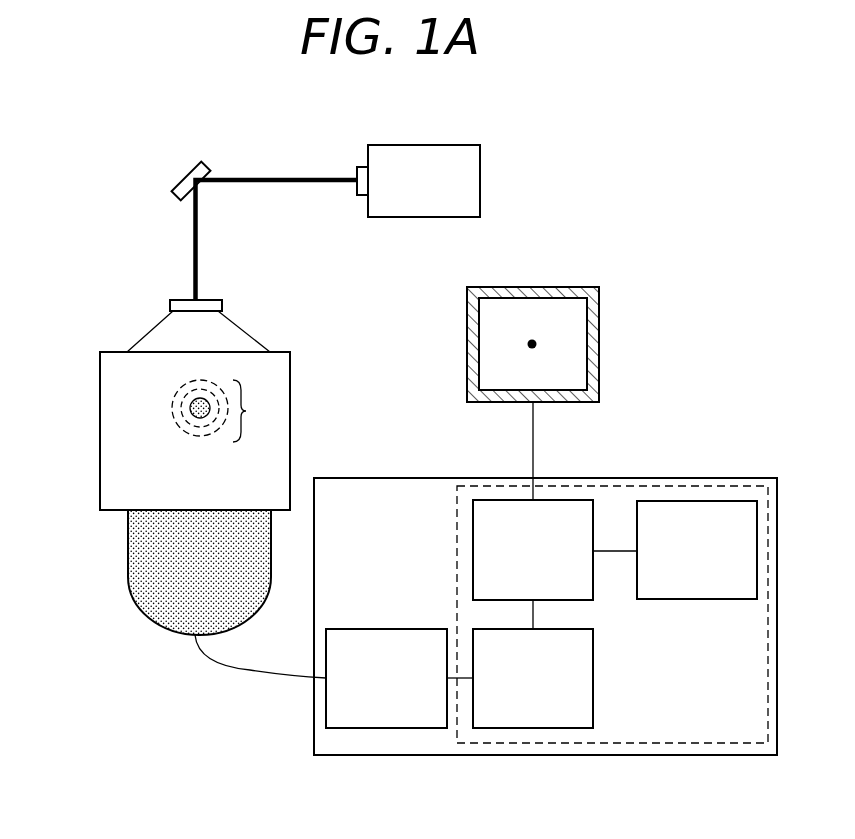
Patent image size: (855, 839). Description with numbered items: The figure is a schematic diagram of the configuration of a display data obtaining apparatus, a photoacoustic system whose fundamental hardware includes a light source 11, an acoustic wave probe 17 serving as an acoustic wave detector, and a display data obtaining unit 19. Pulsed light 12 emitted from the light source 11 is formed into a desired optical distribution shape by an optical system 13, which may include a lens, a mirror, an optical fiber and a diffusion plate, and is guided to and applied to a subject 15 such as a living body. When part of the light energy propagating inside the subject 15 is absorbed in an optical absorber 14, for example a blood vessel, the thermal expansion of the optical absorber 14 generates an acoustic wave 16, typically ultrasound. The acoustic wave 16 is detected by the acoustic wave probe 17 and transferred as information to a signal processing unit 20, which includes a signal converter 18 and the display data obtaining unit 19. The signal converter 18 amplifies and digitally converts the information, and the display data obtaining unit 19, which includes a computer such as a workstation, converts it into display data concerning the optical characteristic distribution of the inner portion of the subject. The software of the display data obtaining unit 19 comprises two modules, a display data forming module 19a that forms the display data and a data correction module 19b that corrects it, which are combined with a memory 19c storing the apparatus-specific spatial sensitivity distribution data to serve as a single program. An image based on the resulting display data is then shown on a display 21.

The light source 11 is at (422, 151).
The pulsed light 12 is at (298, 178).
The optical system 13 is at (189, 179).
The optical absorber 14 is at (195, 407).
The subject 15 is at (107, 370).
The acoustic wave 16 is at (227, 411).
The acoustic wave probe 17 is at (128, 568).
The signal converter 18 is at (391, 635).
The display data obtaining unit 19 is at (687, 487).
The display data forming module 19a is at (585, 672).
The data correction module 19b is at (585, 588).
The memory 19c is at (713, 597).
The signal processing unit 20 is at (391, 488).
The display 21 is at (567, 301).